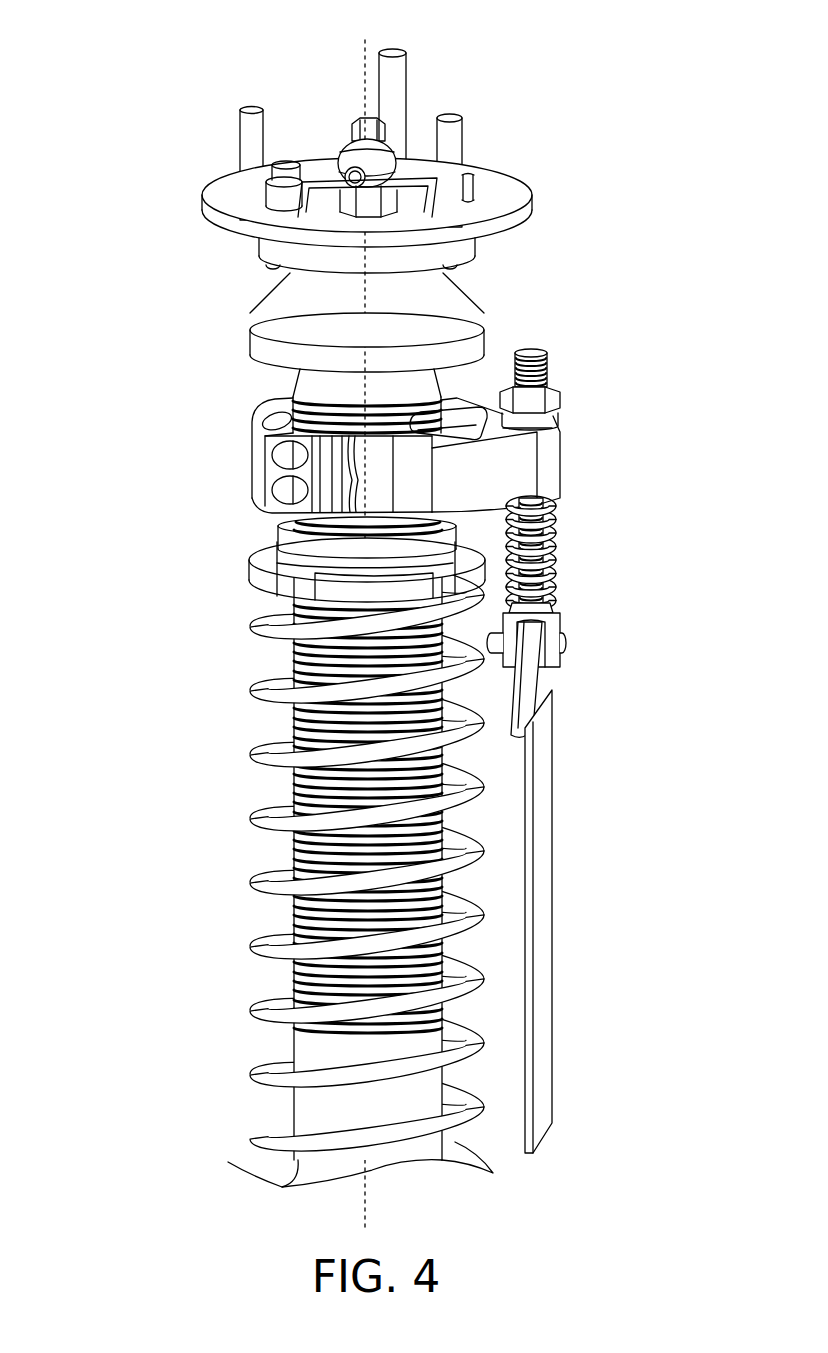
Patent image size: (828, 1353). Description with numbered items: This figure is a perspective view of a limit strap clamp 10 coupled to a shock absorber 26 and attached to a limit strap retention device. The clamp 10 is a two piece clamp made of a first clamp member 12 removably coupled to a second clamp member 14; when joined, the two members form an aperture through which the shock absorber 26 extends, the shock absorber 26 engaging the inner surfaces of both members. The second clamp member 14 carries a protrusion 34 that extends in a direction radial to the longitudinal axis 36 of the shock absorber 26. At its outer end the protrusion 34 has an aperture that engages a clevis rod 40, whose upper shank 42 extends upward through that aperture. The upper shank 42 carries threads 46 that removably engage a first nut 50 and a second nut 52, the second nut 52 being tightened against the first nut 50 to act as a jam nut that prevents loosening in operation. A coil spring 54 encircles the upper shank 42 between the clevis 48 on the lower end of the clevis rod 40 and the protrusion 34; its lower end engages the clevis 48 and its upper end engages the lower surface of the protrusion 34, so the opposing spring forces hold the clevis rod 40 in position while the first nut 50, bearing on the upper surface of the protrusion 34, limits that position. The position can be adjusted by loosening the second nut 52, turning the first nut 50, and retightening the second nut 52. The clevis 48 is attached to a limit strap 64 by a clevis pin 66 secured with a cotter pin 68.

The limit strap clamp 10 is at (221, 386).
The first clamp member 12 is at (260, 466).
The second clamp member 14 is at (280, 490).
The shock absorber 26 is at (296, 856).
The protrusion 34 is at (555, 470).
The longitudinal axis 36 is at (364, 47).
The clevis rod 40 is at (549, 540).
The upper shank 42 is at (531, 350).
The threads 46 is at (547, 376).
The clevis 48 is at (556, 607).
The first nut 50 is at (553, 420).
The second nut 52 is at (560, 402).
The coil spring 54 is at (571, 553).
The limit strap 64 is at (541, 891).
The clevis pin 66 is at (563, 646).
The cotter pin 68 is at (536, 668).